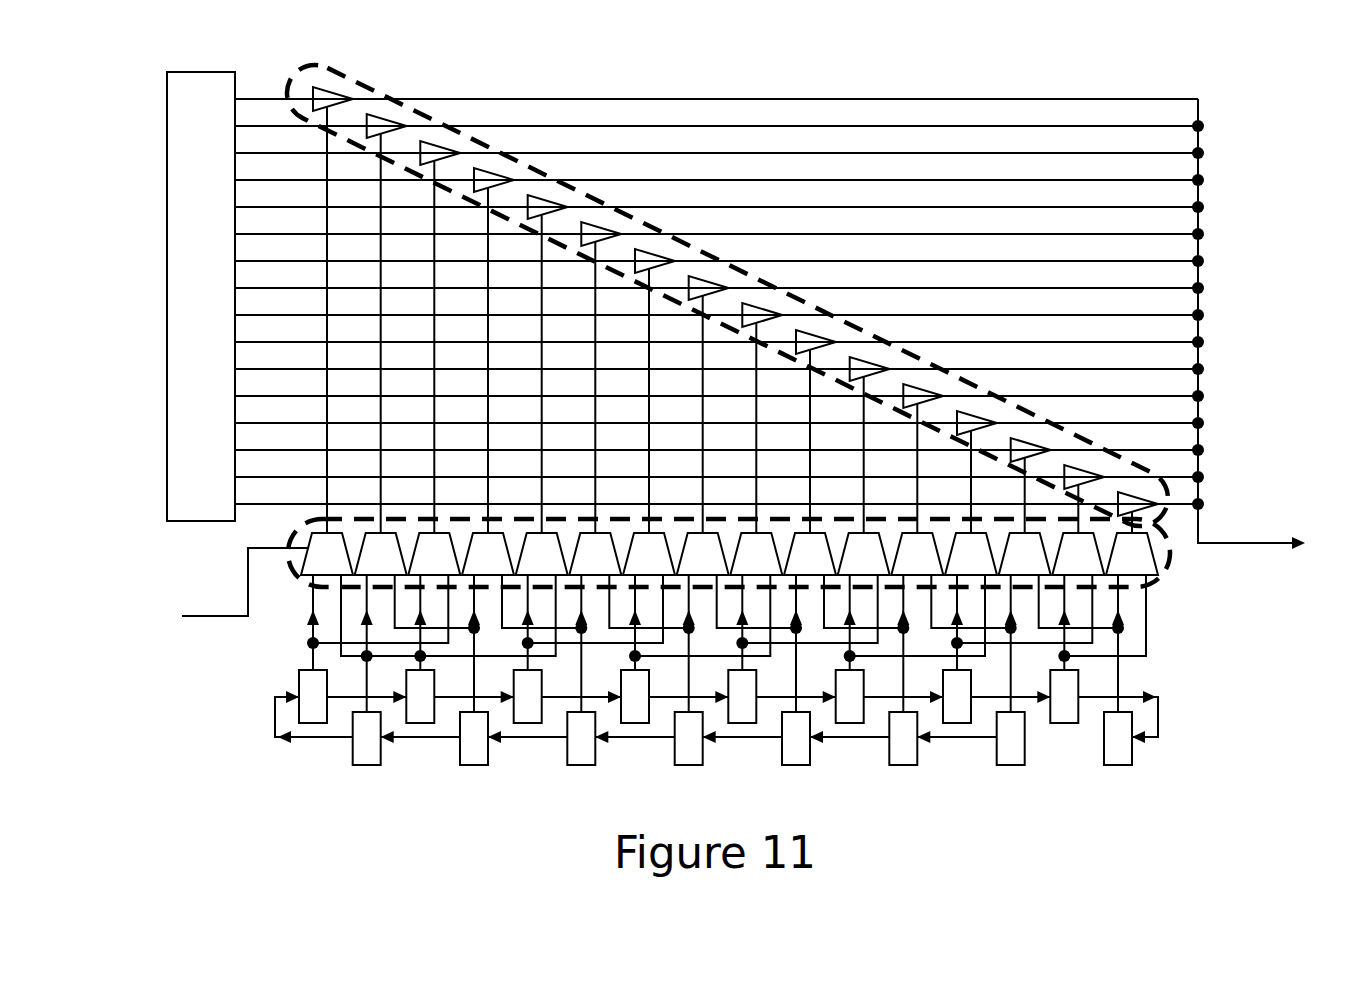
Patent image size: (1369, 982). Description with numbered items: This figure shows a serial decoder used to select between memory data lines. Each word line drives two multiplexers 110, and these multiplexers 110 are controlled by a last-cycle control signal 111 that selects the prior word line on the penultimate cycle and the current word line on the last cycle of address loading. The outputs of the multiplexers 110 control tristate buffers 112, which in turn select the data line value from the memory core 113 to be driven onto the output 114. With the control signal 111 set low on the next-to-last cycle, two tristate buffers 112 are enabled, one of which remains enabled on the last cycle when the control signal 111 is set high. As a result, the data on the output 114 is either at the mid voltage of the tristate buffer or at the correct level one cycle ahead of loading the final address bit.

The multiplexers 110 is at (1172, 559).
The Last signal 111 is at (222, 617).
The tristate buffers 112 is at (350, 83).
The memory core 113 is at (195, 72).
The output 114 is at (1252, 543).